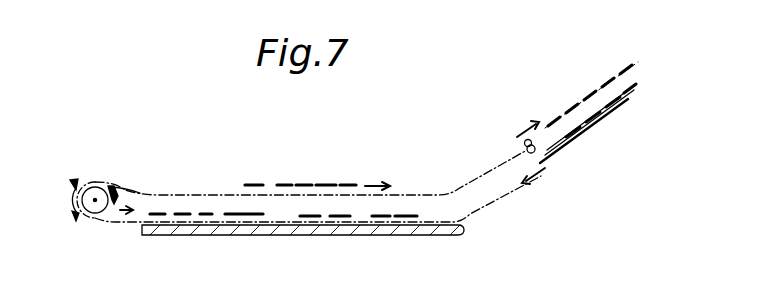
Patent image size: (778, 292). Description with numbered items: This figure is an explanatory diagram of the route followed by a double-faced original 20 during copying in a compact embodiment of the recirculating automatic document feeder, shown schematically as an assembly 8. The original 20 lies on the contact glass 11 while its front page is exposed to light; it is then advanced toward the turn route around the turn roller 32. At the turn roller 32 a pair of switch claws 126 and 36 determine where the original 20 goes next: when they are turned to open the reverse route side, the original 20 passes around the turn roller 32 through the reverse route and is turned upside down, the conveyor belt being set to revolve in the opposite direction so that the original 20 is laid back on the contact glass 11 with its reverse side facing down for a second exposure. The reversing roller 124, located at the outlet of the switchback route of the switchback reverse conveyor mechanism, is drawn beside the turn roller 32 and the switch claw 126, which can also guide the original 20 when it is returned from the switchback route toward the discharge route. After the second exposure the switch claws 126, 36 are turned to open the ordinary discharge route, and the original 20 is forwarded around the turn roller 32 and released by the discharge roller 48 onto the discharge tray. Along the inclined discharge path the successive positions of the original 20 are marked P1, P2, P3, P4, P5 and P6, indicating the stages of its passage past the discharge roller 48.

The sheet conveying apparatus 8 is at (50, 210).
The contact glass 11 is at (298, 236).
The original 20 is at (597, 127).
The turn roller 32 is at (97, 214).
The switch claw 36 is at (108, 184).
The discharge roller 48 is at (524, 146).
The reversing roller 124 is at (55, 226).
The switch claw 126 is at (75, 181).
The sheet position P1 is at (550, 164).
The sheet position P2 is at (615, 105).
The sheet position P3 is at (551, 162).
The sheet position P4 is at (610, 106).
The sheet position P5 is at (580, 140).
The sheet position P6 is at (607, 98).